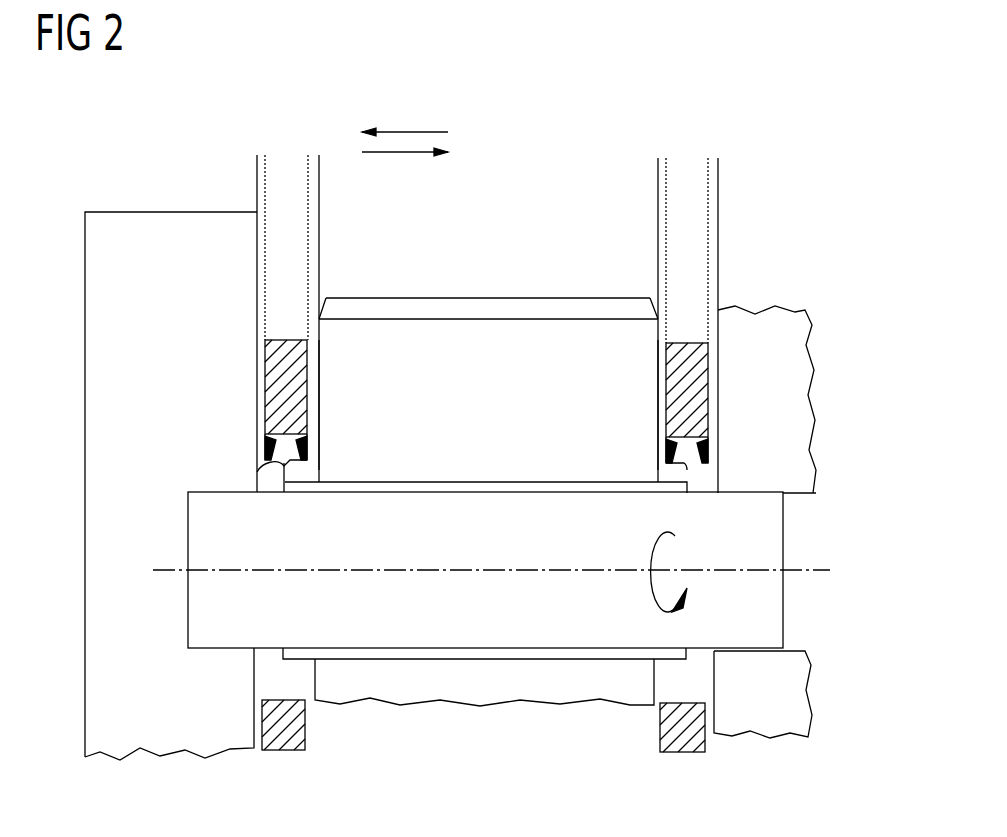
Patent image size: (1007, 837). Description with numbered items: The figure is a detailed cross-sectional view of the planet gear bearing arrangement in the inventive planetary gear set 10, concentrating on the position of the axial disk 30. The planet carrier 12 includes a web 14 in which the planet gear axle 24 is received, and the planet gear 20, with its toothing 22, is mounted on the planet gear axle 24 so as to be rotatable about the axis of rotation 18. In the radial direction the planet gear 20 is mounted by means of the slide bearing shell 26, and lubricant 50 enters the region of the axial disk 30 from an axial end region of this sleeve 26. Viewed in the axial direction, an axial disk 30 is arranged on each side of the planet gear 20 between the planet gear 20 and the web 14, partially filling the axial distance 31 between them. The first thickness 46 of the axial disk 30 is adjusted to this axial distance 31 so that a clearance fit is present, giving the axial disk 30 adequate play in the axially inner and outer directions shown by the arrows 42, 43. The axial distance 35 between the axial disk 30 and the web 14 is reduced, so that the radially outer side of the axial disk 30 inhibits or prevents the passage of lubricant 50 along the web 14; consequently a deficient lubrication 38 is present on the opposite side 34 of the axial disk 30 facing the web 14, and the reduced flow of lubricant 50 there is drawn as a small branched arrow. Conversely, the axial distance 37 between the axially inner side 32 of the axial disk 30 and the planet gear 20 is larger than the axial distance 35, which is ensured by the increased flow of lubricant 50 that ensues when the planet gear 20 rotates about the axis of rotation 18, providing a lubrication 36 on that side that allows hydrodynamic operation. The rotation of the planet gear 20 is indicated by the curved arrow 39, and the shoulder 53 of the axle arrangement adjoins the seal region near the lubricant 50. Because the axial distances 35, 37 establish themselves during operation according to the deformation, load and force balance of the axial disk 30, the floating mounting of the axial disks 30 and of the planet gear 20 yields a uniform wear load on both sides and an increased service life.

The planetary gear set 10 is at (58, 294).
The planet carrier 12 is at (158, 238).
The web 14 is at (752, 715).
The axis of rotation 18 is at (822, 571).
The planet gear 20 is at (448, 328).
The toothing 22 is at (534, 312).
The planet gear axle 24 is at (778, 626).
The slide bearing shell 26 is at (613, 495).
The axial disk 30 is at (672, 358).
The axial distance 31 is at (319, 155).
The axially inner side 32 is at (319, 382).
The opposite side 34 is at (257, 380).
The axial distance 35 is at (298, 180).
The lubrication 36 is at (658, 405).
The axial distance 37 is at (277, 197).
The deficient lubrication 38 is at (708, 405).
The direction of rotation 39 is at (651, 596).
The arrow 42 is at (405, 158).
The arrow 43 is at (410, 132).
The first thickness 46 is at (308, 222).
The lubricant 50 is at (257, 472).
The shoulder 53 is at (283, 488).